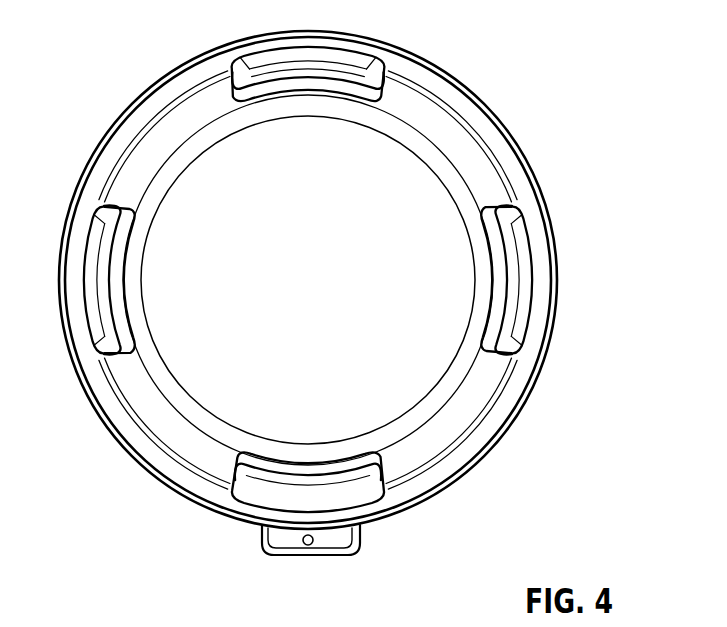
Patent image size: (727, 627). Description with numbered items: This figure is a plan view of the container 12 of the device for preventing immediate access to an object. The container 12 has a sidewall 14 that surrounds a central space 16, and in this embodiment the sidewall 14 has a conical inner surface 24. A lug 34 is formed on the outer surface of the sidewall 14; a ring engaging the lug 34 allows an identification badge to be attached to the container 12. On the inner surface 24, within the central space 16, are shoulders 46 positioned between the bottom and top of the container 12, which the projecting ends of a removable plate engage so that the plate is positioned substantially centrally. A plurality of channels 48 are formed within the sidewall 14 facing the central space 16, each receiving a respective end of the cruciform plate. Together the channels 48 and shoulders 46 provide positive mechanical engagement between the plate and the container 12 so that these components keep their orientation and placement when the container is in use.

The container 12 is at (452, 76).
The sidewall 14 is at (502, 415).
The central space 16 is at (326, 295).
The conical inner surface 24 is at (455, 145).
The lug 34 is at (337, 537).
The shoulders 46 is at (508, 268).
The channels 48 is at (530, 305).